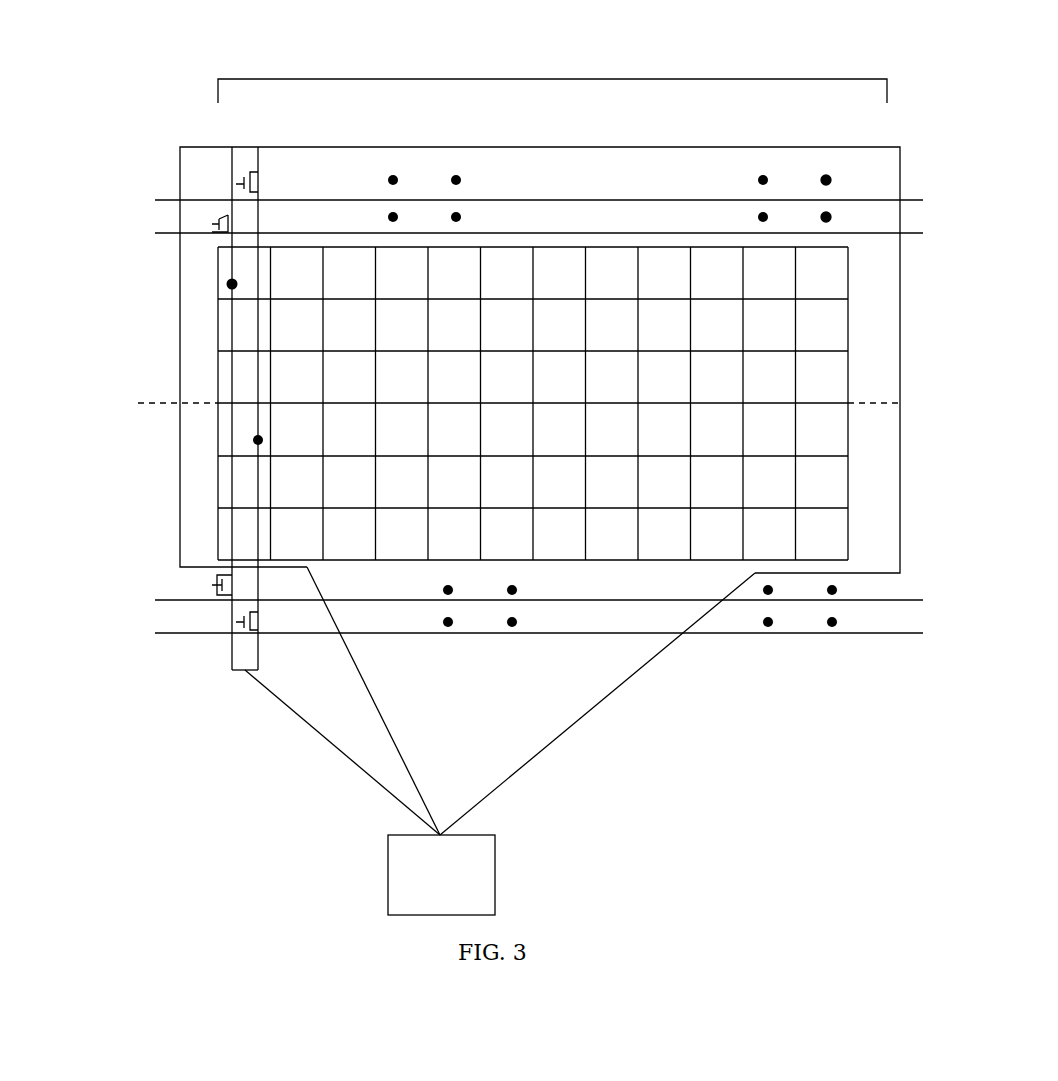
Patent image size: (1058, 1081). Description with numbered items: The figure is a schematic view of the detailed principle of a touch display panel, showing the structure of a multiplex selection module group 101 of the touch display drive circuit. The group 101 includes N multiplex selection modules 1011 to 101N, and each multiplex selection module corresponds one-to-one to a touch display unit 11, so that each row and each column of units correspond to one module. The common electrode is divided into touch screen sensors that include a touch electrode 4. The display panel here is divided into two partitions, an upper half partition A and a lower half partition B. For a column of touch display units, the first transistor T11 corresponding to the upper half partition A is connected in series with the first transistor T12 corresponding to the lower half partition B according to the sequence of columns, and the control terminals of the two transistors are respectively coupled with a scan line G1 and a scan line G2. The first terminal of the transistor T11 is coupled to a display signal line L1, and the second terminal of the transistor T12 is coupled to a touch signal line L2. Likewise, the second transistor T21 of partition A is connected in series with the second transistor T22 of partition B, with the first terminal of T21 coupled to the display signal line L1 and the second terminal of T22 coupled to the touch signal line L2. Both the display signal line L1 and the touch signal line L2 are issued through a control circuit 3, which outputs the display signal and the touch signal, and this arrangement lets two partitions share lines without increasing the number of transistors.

The multiplex selection module group 101 is at (552, 67).
The multiplex selection module 1011 is at (272, 390).
The multiplex selection module 101N is at (826, 160).
The touch display unit 11 is at (218, 385).
The touch electrode 4 is at (230, 283).
The control circuit 3 is at (486, 859).
The scan line G1 is at (165, 200).
The scan line G2 is at (165, 233).
The first transistor T11 is at (208, 219).
The first transistor T12 is at (265, 183).
The second transistor T21 is at (199, 587).
The second transistor T22 is at (269, 622).
The display signal line L1 is at (597, 704).
The touch signal line L2 is at (342, 701).
The partition A is at (92, 382).
The partition B is at (92, 442).